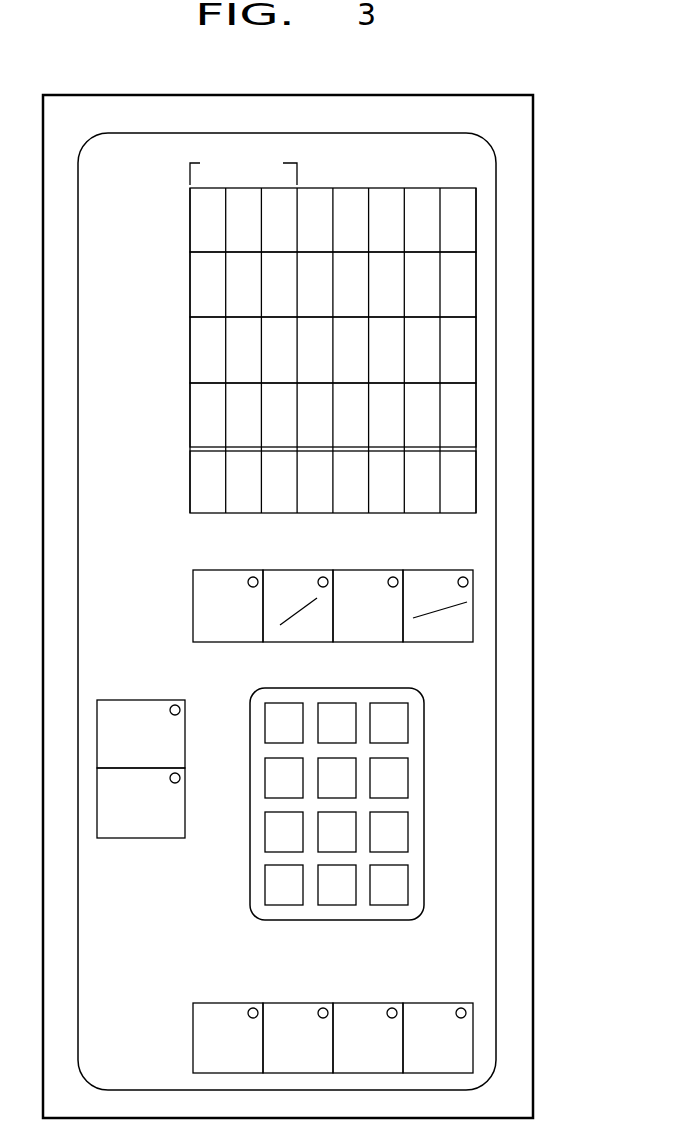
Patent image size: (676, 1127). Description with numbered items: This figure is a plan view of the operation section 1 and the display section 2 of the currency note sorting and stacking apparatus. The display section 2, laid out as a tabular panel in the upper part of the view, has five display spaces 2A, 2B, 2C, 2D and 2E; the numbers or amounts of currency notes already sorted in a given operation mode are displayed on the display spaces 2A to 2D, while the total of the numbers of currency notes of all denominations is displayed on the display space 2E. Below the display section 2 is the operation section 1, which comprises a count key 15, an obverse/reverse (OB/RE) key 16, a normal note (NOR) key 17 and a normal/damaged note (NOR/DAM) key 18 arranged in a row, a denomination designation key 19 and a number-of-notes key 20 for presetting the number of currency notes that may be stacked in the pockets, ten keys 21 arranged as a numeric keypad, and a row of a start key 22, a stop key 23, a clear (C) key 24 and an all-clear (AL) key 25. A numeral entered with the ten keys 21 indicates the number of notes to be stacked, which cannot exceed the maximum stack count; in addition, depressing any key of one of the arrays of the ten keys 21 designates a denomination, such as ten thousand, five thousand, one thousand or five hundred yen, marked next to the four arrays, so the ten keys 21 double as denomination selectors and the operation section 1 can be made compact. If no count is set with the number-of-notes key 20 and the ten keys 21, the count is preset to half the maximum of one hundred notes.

The operation section 1 is at (533, 815).
The display section 2 is at (538, 322).
The display space 2A is at (476, 222).
The display space 2B is at (476, 278).
The display space 2C is at (476, 364).
The display space 2D is at (476, 413).
The display space 2E is at (476, 480).
The count key 15 is at (228, 577).
The obverse/reverse key 16 is at (302, 577).
The normal note key 17 is at (368, 577).
The normal/damaged note key 18 is at (439, 577).
The denomination designation key 19 is at (123, 706).
The number-of-notes key 20 is at (117, 838).
The ten keys 21 is at (250, 880).
The start key 22 is at (230, 1008).
The stop key 23 is at (302, 1008).
The clear key 24 is at (368, 1008).
The all-clear key 25 is at (438, 1008).